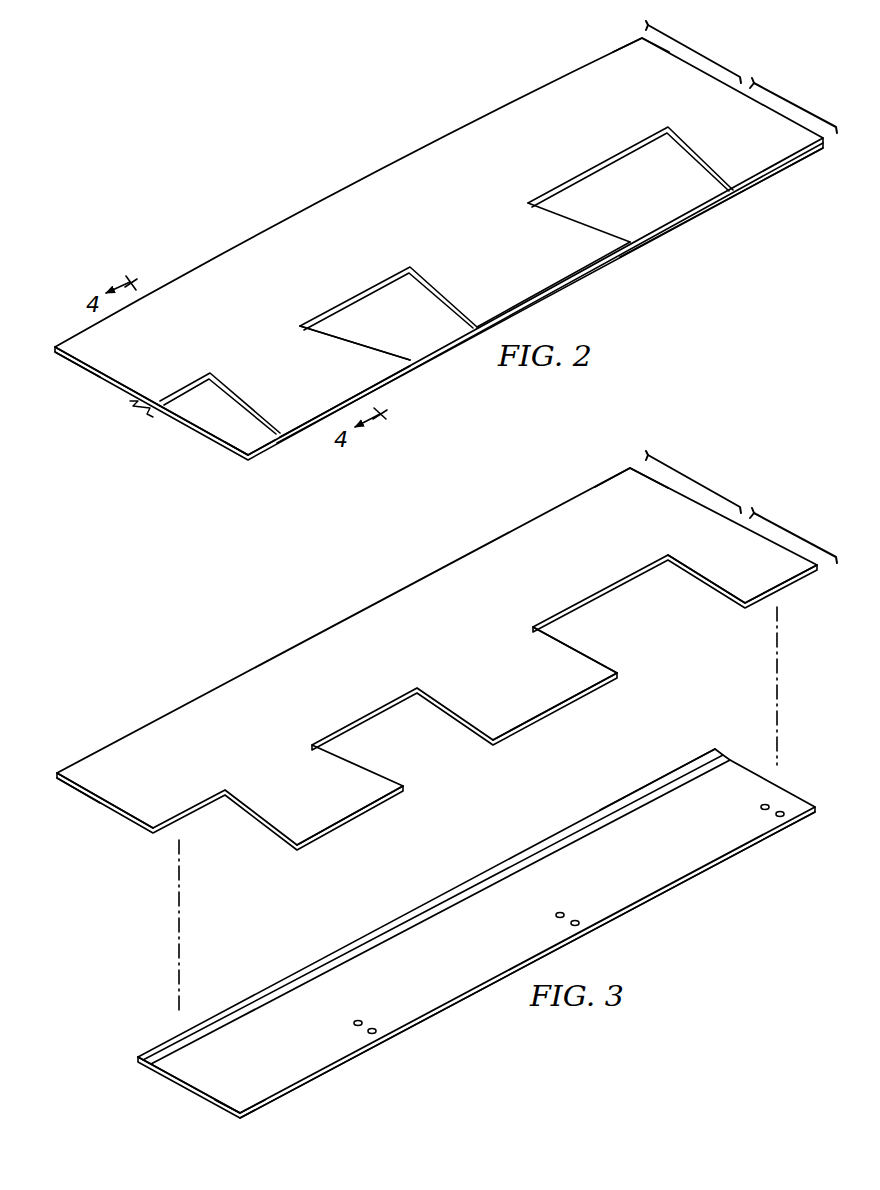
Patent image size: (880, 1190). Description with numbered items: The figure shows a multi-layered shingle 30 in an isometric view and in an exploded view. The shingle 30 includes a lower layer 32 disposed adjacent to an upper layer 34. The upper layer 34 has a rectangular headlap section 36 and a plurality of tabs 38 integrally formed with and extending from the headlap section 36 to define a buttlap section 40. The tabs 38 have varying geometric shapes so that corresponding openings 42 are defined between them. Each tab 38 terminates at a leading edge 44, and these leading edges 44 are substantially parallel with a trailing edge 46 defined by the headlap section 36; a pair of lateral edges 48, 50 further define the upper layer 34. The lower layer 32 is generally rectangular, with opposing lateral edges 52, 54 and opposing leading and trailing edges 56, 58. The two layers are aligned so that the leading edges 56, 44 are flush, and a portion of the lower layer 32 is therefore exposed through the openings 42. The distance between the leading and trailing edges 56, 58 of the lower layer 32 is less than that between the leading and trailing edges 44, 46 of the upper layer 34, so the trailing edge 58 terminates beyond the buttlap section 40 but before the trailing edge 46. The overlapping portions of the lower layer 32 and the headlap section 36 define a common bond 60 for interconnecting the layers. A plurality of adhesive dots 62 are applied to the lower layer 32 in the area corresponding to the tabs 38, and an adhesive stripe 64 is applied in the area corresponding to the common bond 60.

In FIG. 2, the multi-layered shingle 30 is at (258, 140).
In FIG. 2, the lower layer 32 is at (200, 437).
In FIG. 3, the lower layer 32 is at (196, 1097).
In FIG. 2, the upper layer 34 is at (70, 362).
In FIG. 3, the upper layer 34 is at (80, 797).
In FIG. 2, the headlap section 36 is at (693, 52).
In FIG. 3, the headlap section 36 is at (693, 482).
In FIG. 2, the tabs 38 is at (381, 385).
In FIG. 3, the tabs 38 is at (580, 700).
In FIG. 2, the buttlap section 40 is at (793, 103).
In FIG. 3, the buttlap section 40 is at (385, 797).
In FIG. 2, the openings 42 is at (400, 356).
In FIG. 3, the openings 42 is at (704, 581).
In FIG. 2, the leading edge 44 is at (597, 265).
In FIG. 3, the leading edge 44 is at (533, 722).
In FIG. 2, the trailing edge 46 is at (432, 143).
In FIG. 3, the trailing edge 46 is at (340, 619).
In FIG. 2, the lateral edge 48 is at (103, 379).
In FIG. 3, the lateral edge 48 is at (118, 813).
In FIG. 2, the lateral edge 50 is at (641, 37).
In FIG. 3, the lateral edge 50 is at (639, 467).
In FIG. 2, the lateral edge 52 is at (232, 453).
In FIG. 3, the lateral edge 52 is at (228, 1112).
In FIG. 3, the lateral edge 54 is at (789, 789).
In FIG. 2, the leading edge 56 is at (687, 222).
In FIG. 3, the leading edge 56 is at (285, 1095).
In FIG. 3, the trailing edge 58 is at (313, 962).
In FIG. 2, the common bond 60 is at (132, 422).
In FIG. 3, the adhesive dots 62 is at (786, 816).
In FIG. 3, the adhesive stripe 64 is at (721, 756).